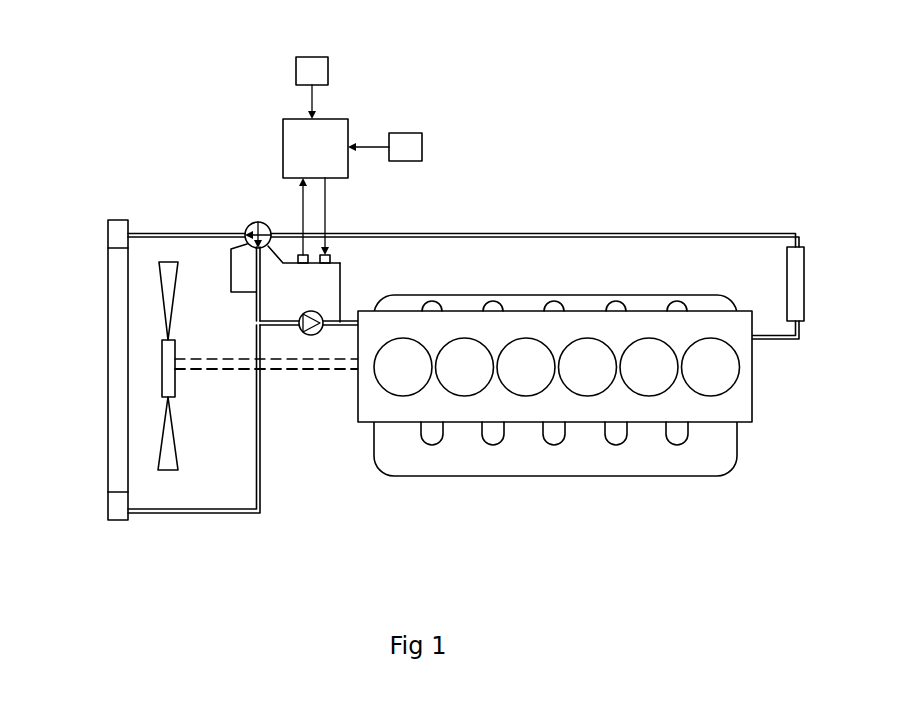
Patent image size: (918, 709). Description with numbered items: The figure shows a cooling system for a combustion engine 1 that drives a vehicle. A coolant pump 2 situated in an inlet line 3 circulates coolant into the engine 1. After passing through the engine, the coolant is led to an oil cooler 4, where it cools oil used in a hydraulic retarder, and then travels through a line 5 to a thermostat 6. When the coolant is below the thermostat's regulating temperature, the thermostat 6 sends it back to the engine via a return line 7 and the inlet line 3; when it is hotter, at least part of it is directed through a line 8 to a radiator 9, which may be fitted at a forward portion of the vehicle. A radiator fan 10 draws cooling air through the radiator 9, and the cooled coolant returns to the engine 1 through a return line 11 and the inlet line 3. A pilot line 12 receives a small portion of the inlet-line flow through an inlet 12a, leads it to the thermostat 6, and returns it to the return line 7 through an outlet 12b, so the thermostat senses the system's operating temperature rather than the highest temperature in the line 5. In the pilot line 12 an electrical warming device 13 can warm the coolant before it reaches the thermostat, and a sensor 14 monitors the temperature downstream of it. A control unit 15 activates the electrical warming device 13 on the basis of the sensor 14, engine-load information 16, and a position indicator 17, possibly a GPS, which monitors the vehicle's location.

The combustion engine 1 is at (738, 402).
The coolant pump 2 is at (312, 333).
The inlet line 3 is at (272, 327).
The oil cooler 4 is at (800, 266).
The line 5 is at (568, 232).
The thermostat 6 is at (257, 222).
The return line 7 is at (257, 310).
The line 8 is at (185, 232).
The radiator 9 is at (115, 318).
The radiator fan 10 is at (168, 378).
The return line 11 is at (261, 460).
The pilot line 12 is at (345, 260).
The inlet 12a is at (342, 318).
The outlet 12b is at (253, 292).
The electrical warming device 13 is at (324, 267).
The sensor 14 is at (298, 265).
The control unit 15 is at (298, 138).
The information 16 is at (402, 145).
The position indicator 17 is at (314, 68).